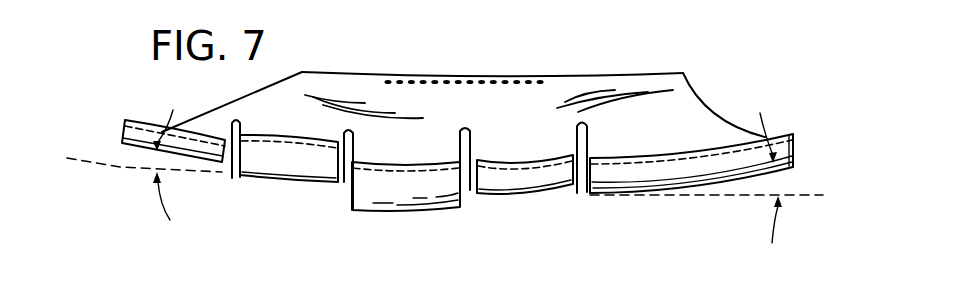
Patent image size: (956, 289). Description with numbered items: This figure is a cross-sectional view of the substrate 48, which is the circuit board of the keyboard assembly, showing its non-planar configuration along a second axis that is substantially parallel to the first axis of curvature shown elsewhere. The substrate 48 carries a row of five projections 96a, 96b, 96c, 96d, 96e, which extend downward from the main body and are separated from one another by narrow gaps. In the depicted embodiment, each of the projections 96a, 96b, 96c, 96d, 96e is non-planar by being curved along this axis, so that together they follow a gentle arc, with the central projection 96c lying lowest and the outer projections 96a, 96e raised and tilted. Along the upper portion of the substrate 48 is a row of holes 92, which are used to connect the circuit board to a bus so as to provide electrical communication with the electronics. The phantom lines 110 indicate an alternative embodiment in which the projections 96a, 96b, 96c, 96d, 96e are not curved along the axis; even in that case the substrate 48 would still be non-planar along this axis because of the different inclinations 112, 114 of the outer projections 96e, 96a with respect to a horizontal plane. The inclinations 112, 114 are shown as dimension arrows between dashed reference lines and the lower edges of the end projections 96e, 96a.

The substrate 48 is at (697, 103).
The holes 92 is at (543, 82).
The projection 96a is at (598, 190).
The projection 96b is at (483, 183).
The projection 96c is at (365, 198).
The projection 96d is at (247, 167).
The projection 96e is at (123, 142).
The phantom lines 110 is at (123, 158).
The inclination 112 is at (153, 165).
The inclination 114 is at (778, 181).